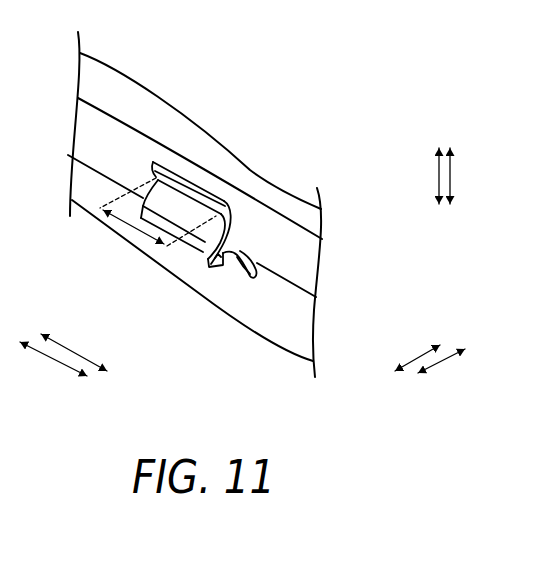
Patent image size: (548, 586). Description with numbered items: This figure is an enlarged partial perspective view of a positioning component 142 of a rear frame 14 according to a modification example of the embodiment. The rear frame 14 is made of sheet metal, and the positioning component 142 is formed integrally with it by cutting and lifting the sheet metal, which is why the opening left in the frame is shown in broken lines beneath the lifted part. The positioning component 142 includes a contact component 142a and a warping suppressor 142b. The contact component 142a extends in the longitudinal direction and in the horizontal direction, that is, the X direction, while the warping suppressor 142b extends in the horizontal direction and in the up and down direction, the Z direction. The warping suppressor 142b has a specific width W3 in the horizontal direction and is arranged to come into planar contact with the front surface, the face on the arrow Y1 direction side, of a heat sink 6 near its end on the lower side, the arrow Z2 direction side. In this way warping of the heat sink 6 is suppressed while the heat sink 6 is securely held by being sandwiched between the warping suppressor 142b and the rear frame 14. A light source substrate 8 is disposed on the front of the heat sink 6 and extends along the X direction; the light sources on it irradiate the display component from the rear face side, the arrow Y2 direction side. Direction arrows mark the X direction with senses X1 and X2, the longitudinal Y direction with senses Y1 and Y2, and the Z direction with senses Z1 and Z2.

The heat sink 6 is at (298, 256).
The light source substrate 8 is at (288, 208).
The rear frame 14 is at (286, 333).
The positioning component 142 is at (194, 252).
The contact component 142a is at (217, 247).
The warping suppressor 142b is at (219, 217).
The width W3 is at (128, 223).
The X direction X is at (53, 359).
The arrow X1 direction X1 is at (74, 351).
The arrow X2 direction X2 is at (90, 352).
The Y direction Y is at (441, 363).
The arrow Y1 direction Y1 is at (415, 358).
The arrow Y2 direction Y2 is at (420, 341).
The Z direction Z is at (459, 176).
The arrow Z1 direction Z1 is at (426, 176).
The arrow Z2 direction Z2 is at (422, 188).